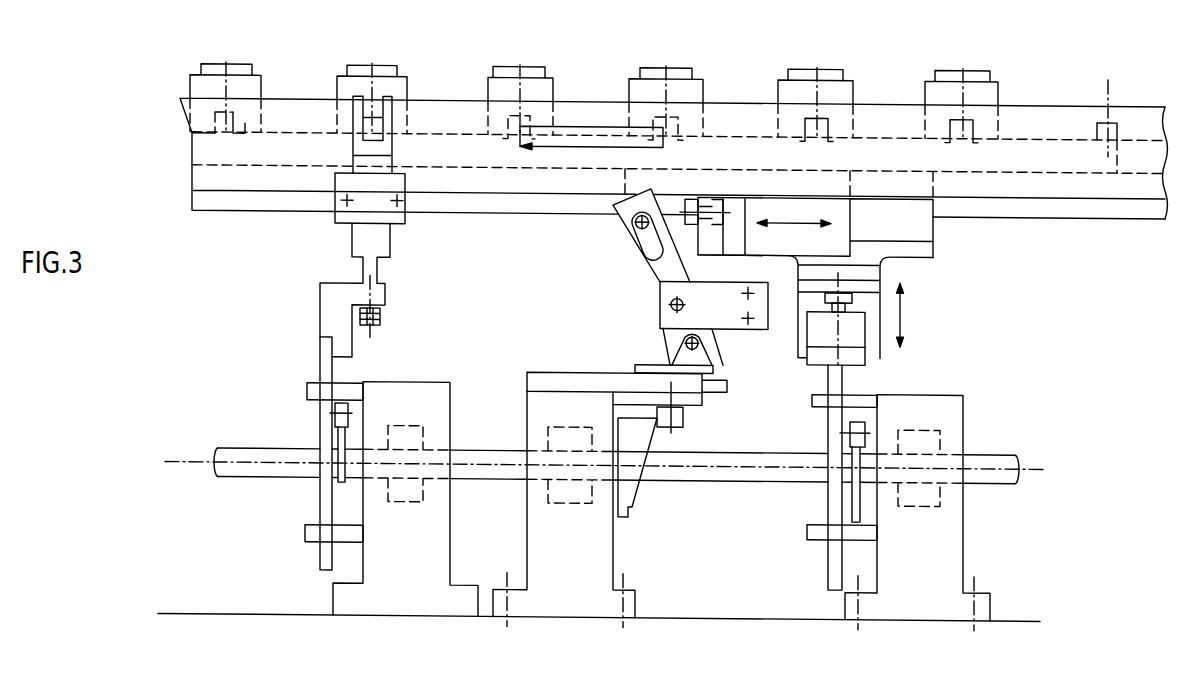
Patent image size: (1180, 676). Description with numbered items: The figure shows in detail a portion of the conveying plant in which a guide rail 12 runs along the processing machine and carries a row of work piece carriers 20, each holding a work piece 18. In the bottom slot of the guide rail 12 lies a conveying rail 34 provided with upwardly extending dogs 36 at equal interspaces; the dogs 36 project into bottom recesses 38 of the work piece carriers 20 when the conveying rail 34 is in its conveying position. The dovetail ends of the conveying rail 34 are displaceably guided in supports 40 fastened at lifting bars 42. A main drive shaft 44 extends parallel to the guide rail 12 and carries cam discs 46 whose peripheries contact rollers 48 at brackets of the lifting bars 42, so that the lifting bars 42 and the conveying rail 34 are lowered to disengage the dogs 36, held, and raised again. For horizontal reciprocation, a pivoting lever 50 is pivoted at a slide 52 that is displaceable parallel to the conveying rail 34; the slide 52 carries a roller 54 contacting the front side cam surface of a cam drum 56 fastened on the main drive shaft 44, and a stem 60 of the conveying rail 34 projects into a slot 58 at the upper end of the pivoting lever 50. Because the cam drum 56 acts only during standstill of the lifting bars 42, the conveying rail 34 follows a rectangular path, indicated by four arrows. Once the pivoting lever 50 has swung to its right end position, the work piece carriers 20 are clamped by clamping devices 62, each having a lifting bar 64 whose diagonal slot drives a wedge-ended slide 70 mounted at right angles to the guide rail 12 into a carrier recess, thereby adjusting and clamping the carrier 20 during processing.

The guide rail 12 is at (437, 92).
The work piece 18 is at (823, 60).
The work piece carrier 20 is at (784, 79).
The conveying rail 34 is at (1047, 152).
The dog 36 is at (210, 113).
The bottom recess 38 is at (238, 119).
The support 40 is at (920, 222).
The lifting bar 42 is at (837, 374).
The main drive shaft 44 is at (1003, 453).
The cam disc 46 is at (857, 495).
The roller 48 is at (857, 415).
The pivoting lever 50 is at (657, 271).
The slide 52 is at (640, 357).
The roller 54 is at (686, 406).
The cam drum 56 is at (627, 501).
The slot 58 is at (640, 234).
The stem 60 is at (632, 224).
The clamping device 62 is at (317, 292).
The lifting bar 64 is at (327, 347).
The slide 70 is at (372, 110).